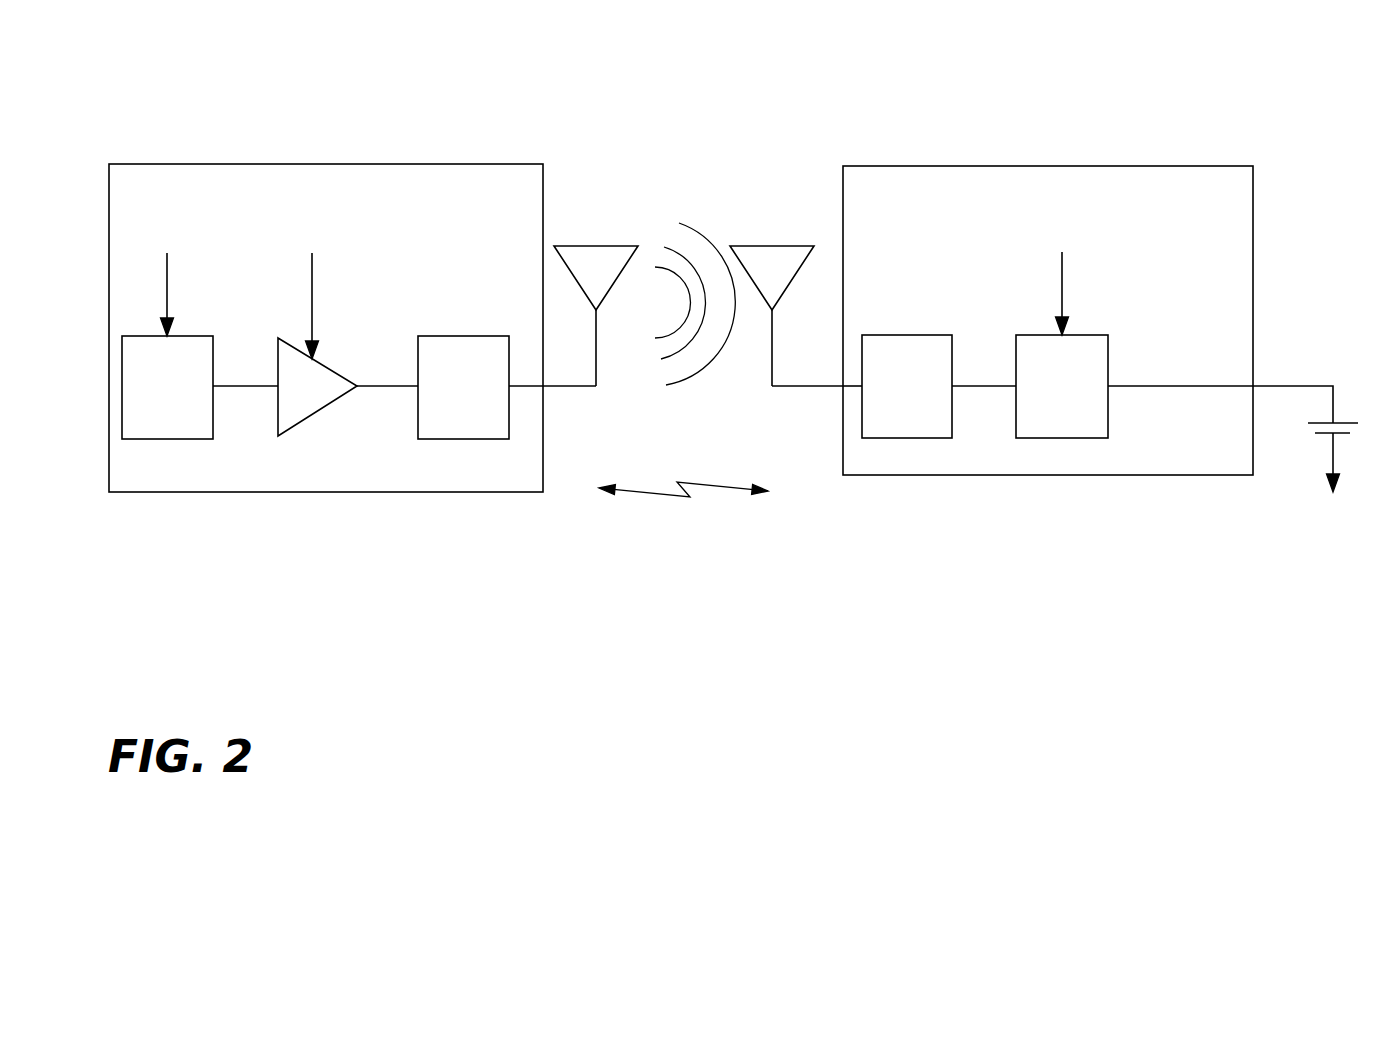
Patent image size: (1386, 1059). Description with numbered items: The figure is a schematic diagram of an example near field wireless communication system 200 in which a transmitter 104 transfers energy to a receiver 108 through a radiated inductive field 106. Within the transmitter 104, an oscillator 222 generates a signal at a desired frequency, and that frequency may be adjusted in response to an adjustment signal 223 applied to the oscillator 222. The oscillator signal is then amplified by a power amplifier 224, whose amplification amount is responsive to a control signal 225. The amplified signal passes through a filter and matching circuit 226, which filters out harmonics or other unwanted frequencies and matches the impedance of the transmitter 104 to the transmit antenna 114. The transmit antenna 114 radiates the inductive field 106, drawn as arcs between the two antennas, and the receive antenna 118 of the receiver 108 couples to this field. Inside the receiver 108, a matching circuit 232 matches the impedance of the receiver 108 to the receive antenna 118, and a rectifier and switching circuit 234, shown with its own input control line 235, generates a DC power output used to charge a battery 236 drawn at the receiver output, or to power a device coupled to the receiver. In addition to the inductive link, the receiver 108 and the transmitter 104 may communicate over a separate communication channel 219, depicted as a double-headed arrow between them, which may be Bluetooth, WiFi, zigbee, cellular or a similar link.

The near field wireless communication system 200 is at (538, 95).
The transmitter 104 is at (326, 328).
The oscillator 222 is at (167, 387).
The adjustment signal 223 is at (167, 276).
The power amplifier 224 is at (317, 393).
The control signal 225 is at (312, 276).
The filter and matching circuit 226 is at (463, 356).
The transmit antenna 114 is at (567, 246).
The receive antenna 118 is at (791, 246).
The radiated inductive field 106 is at (691, 378).
The communication channel 219 is at (694, 514).
The receiver 108 is at (1048, 320).
The matching circuit 232 is at (907, 364).
The rectifier and switching circuit 234 is at (1062, 386).
The rectifier switching control signal 235 is at (1062, 276).
The battery 236 is at (1274, 384).